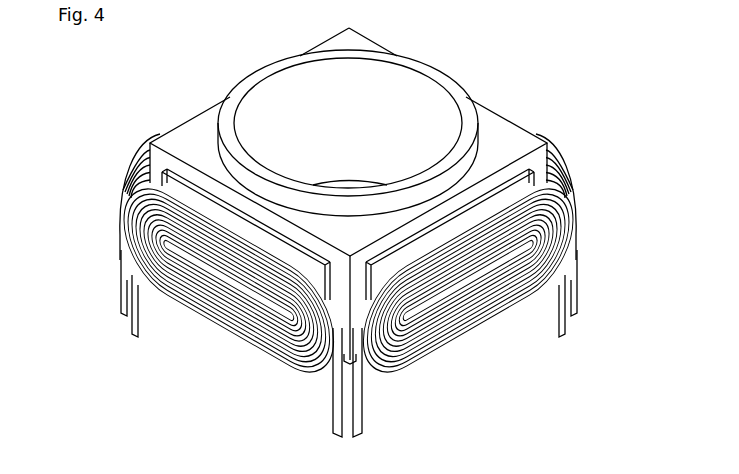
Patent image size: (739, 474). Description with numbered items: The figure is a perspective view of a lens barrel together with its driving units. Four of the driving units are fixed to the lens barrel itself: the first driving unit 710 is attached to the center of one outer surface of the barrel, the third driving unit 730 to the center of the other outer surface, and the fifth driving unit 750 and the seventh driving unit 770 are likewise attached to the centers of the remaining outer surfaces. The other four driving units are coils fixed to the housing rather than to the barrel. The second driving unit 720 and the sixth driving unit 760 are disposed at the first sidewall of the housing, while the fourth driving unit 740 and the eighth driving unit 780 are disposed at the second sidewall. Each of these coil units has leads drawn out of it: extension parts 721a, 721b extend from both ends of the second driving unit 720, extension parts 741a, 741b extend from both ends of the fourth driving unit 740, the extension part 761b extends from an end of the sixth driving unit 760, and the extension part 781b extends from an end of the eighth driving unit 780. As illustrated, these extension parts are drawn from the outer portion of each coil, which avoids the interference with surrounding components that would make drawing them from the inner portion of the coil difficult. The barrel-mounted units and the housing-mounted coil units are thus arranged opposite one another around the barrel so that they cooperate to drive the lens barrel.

The first driving unit 710 is at (380, 262).
The second driving unit 720 is at (483, 327).
The extension part 721a is at (361, 393).
The extension part 721b is at (578, 297).
The third driving unit 730 is at (328, 263).
The fourth driving unit 740 is at (217, 323).
The extension part 741a is at (120, 295).
The extension part 741b is at (334, 393).
The fifth driving unit 750 is at (193, 117).
The sixth driving unit 760 is at (137, 163).
The extension part 761b is at (130, 327).
The seventh driving unit 770 is at (482, 98).
The eighth driving unit 780 is at (513, 118).
The extension part 781b is at (566, 328).